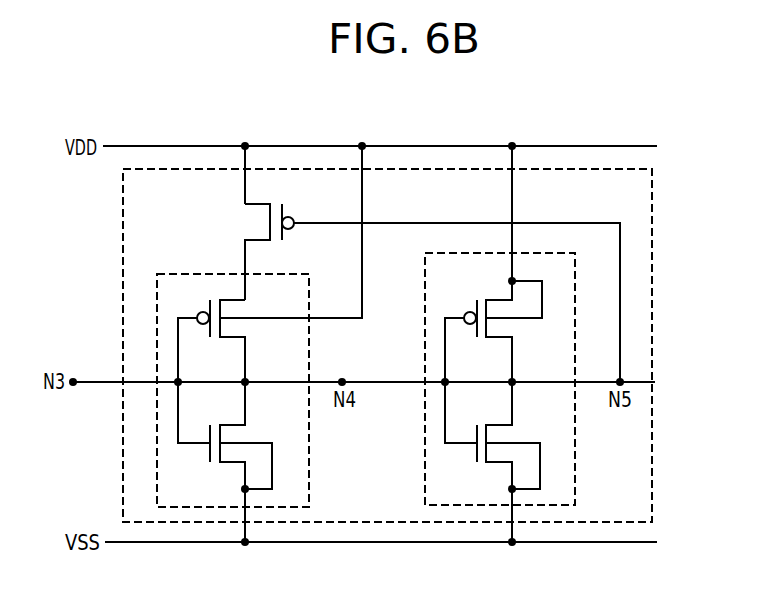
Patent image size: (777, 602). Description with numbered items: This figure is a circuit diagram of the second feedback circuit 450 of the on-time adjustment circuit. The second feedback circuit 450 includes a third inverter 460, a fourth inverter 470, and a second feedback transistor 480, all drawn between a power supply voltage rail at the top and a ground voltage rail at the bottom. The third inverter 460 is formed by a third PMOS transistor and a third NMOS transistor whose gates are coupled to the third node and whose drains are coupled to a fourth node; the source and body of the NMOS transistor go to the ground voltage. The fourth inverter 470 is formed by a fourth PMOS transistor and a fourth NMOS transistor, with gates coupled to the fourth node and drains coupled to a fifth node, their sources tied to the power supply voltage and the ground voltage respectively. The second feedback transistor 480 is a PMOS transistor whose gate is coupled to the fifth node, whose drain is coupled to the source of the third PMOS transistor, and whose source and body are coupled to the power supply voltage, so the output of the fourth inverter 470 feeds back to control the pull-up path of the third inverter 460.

The second feedback circuit 450 is at (652, 257).
The third inverter 460 is at (310, 472).
The fourth inverter 470 is at (575, 472).
The second feedback transistor 480 is at (262, 242).